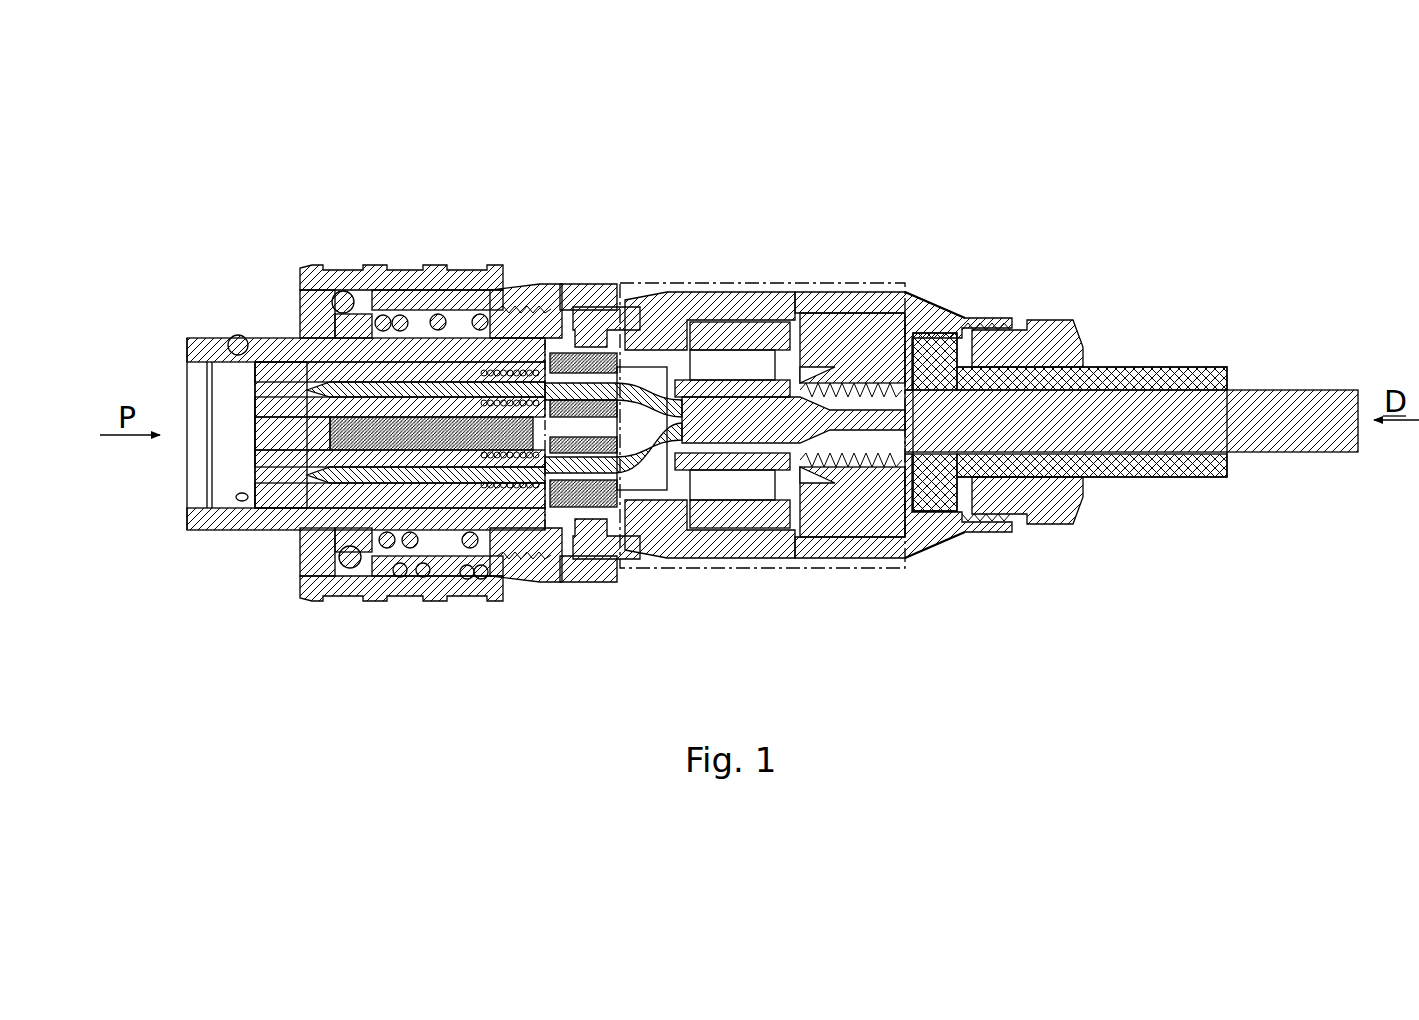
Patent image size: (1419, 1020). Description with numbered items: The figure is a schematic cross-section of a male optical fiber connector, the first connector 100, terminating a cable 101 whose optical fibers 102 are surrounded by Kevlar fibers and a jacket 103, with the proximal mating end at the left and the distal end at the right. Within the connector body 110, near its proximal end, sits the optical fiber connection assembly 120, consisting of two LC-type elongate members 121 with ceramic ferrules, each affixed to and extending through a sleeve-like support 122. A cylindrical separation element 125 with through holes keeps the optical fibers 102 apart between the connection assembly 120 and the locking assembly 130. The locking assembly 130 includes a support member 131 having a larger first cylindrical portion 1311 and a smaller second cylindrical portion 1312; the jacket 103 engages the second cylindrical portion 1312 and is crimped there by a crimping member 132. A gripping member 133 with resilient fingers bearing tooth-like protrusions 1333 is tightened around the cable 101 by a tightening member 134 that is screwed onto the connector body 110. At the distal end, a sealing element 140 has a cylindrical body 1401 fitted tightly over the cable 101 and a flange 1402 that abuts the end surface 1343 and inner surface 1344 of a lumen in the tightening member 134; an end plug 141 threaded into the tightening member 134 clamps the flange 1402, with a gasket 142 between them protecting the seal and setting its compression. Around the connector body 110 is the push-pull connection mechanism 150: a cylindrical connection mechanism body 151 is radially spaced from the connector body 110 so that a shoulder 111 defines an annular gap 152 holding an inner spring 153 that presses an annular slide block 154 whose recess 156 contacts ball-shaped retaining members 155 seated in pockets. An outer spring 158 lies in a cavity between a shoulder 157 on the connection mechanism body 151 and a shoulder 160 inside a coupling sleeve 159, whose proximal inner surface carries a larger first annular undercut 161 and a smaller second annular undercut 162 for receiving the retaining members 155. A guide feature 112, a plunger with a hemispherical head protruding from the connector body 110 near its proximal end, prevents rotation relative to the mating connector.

The first connector 100 is at (146, 128).
The cable 101 is at (1297, 405).
The optical fiber 102 is at (573, 473).
The Kevlar fibers and jacket 103 is at (767, 470).
The connector body 110 is at (635, 310).
The shoulder 111 is at (578, 305).
The guide feature 112 is at (233, 334).
The optical fiber connection assembly 120 is at (297, 343).
The elongate member 121 is at (327, 463).
The support 122 is at (578, 330).
The separation element 125 is at (607, 355).
The locking assembly 130 is at (768, 283).
The support member 131 is at (668, 343).
The crimping member 132 is at (797, 318).
The gripping member 133 is at (780, 517).
The tightening member 134 is at (920, 299).
The sealing element 140 is at (1159, 362).
The end plug 141 is at (1048, 333).
The gasket 142 is at (963, 500).
The push-pull connection mechanism 150 is at (320, 594).
The connection mechanism body 151 is at (518, 298).
The annular gap 152 is at (418, 300).
The inner spring 153 is at (443, 298).
The annular slide block 154 is at (379, 298).
The retaining member 155 is at (344, 291).
The recess 156 is at (332, 560).
The shoulder 157 is at (483, 580).
The outer spring 158 is at (423, 580).
The coupling sleeve 159 is at (362, 580).
The shoulder 160 is at (395, 580).
The first annular undercut 161 is at (343, 297).
The second annular undercut 162 is at (362, 296).
The first cylindrical portion 1311 is at (637, 503).
The second cylindrical portion 1312 is at (703, 470).
The protrusions 1333 is at (838, 470).
The end surface 1343 is at (913, 512).
The inner surface 1344 is at (945, 318).
The cylindrical body 1401 is at (1135, 478).
The flange 1402 is at (943, 510).